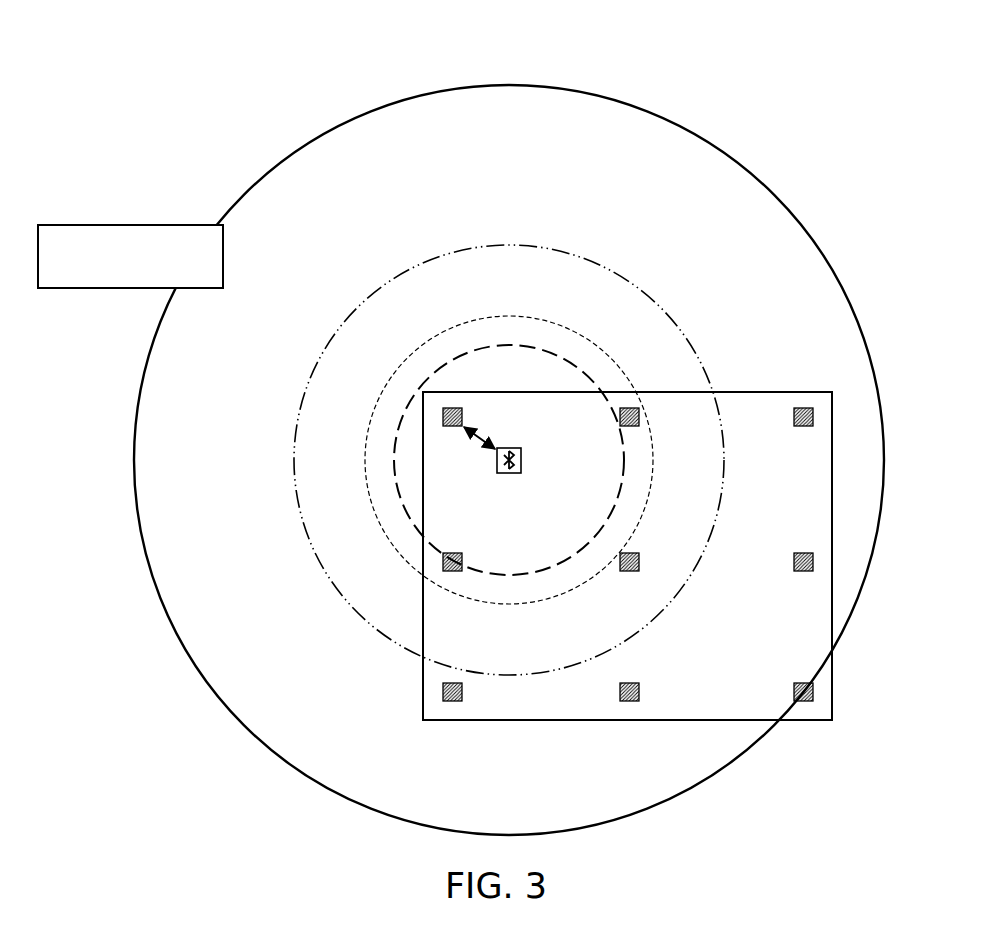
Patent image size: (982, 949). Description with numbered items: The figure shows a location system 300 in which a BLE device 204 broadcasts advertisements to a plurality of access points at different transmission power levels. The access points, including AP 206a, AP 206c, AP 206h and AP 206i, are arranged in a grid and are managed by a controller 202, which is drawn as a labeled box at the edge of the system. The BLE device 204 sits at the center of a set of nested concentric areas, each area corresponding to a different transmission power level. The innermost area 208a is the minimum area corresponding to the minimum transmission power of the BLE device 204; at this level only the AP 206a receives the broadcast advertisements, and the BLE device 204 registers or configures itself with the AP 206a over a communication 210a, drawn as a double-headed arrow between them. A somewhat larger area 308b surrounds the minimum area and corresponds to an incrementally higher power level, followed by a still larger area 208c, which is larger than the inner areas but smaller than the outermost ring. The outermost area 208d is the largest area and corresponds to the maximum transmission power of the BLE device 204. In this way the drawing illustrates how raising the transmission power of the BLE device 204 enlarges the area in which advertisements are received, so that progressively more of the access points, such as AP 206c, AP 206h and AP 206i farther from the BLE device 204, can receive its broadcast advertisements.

The system 300 is at (270, 54).
The controller 202 is at (142, 225).
The BLE device 204 is at (516, 475).
The AP 206a is at (463, 414).
The AP 206c is at (803, 427).
The AP 206h is at (630, 683).
The AP 206i is at (805, 684).
The area 208a is at (487, 573).
The area 208c is at (513, 245).
The area 208d is at (551, 85).
The second range zone 308b is at (512, 316).
The communication 210a is at (473, 445).